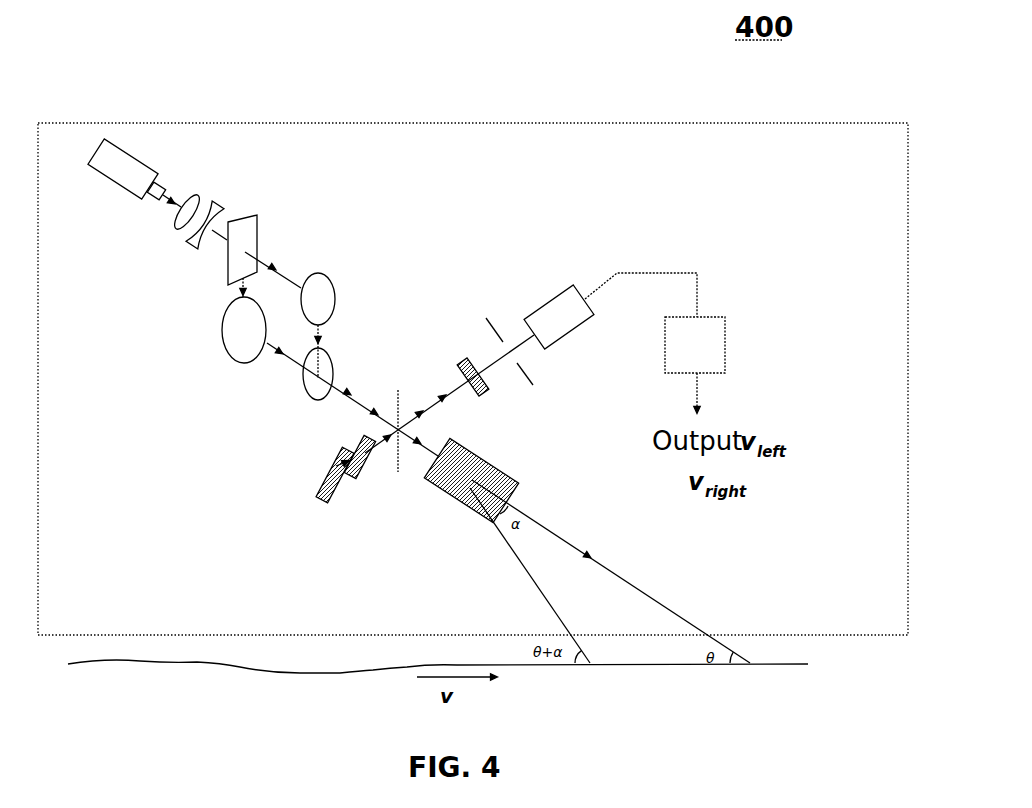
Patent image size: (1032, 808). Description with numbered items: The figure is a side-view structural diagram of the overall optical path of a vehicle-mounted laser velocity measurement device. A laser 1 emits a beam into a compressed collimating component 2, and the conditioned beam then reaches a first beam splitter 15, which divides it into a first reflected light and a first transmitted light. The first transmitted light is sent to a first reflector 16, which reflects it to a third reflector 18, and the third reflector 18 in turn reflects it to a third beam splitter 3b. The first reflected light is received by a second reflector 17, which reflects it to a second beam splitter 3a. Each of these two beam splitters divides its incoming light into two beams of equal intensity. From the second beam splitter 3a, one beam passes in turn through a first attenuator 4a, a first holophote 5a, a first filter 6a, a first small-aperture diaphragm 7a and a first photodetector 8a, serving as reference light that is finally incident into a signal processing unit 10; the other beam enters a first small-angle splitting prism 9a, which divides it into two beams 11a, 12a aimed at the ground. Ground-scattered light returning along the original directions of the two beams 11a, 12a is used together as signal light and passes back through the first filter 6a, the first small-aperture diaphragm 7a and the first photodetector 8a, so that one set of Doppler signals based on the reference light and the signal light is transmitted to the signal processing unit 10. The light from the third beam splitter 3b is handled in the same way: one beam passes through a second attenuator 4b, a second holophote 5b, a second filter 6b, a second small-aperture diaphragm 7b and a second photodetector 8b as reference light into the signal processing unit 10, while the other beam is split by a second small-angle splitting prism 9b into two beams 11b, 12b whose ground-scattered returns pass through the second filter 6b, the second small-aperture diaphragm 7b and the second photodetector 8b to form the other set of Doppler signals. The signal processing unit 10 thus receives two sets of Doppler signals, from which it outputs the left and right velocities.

The laser 1 is at (88, 160).
The compressed collimating component 2 is at (180, 237).
The first beam splitter 15 is at (257, 227).
The first reflector 16 is at (335, 297).
The second reflector 17 is at (222, 340).
The third reflector 18 is at (332, 358).
The second beam splitter 3a is at (422, 419).
The third beam splitter 3b is at (422, 388).
The first attenuator 4a is at (390, 472).
The second attenuator 4b is at (363, 478).
The first holophote 5a is at (370, 490).
The second holophote 5b is at (350, 502).
The first filter 6a is at (506, 397).
The second filter 6b is at (485, 395).
The first small-aperture diaphragm 7a is at (543, 366).
The second small-aperture diaphragm 7b is at (530, 385).
The first photodetector 8a is at (583, 324).
The second photodetector 8b is at (572, 337).
The first small-angle splitting prism 9a is at (509, 481).
The second small-angle splitting prism 9b is at (513, 473).
The signal processing unit 10 is at (717, 315).
The beam 11a is at (611, 571).
The beam 11b is at (613, 567).
The beam 12a is at (530, 575).
The beam 12b is at (525, 560).